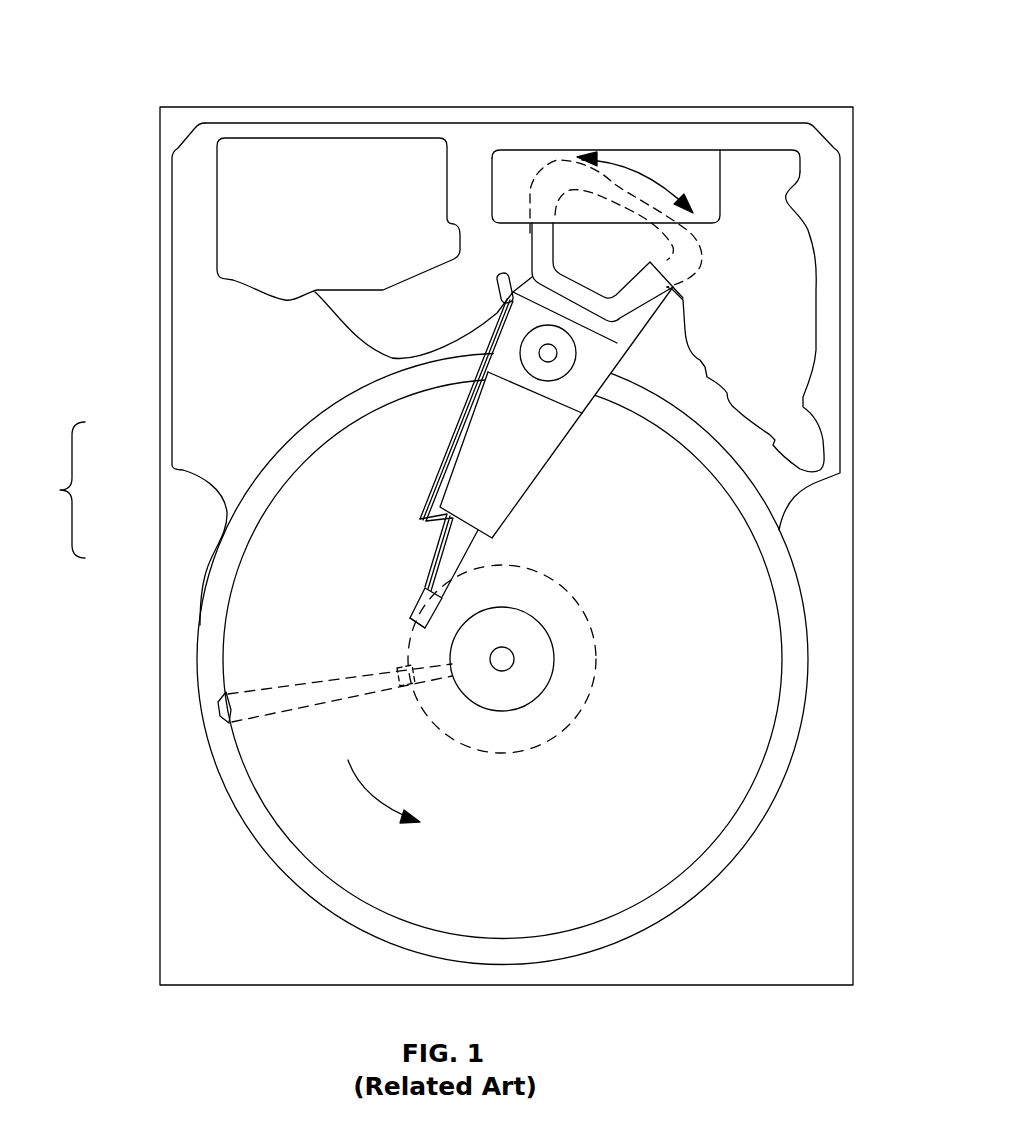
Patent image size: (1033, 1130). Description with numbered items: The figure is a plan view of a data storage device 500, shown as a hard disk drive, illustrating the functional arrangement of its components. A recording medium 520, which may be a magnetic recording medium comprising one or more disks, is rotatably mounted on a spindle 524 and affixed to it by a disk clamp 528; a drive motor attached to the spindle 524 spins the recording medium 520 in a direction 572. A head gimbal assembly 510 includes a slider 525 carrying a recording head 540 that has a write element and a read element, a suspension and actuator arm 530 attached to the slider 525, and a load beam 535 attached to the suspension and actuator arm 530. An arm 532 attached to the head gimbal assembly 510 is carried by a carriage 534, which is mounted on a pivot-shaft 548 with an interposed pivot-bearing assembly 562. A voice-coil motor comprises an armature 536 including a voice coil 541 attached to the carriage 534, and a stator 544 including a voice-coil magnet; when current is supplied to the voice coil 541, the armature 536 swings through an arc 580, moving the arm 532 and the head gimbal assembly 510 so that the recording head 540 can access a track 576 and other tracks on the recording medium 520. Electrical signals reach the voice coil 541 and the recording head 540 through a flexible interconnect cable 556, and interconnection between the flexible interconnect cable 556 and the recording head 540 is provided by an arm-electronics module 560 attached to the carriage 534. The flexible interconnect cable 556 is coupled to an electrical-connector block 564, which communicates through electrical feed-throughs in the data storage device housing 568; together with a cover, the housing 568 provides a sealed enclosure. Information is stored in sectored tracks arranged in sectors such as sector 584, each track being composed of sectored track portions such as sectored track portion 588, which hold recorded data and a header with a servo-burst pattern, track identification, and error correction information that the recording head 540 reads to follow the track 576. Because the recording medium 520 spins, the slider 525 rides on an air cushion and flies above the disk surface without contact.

The data storage device 500 is at (150, 29).
The head gimbal assembly 510 is at (50, 490).
The recording medium 520 is at (745, 647).
The spindle 524 is at (510, 698).
The slider 525 is at (272, 558).
The disk clamp 528 is at (507, 661).
The suspension and actuator arm 530 is at (290, 525).
The arm 532 is at (500, 485).
The carriage 534 is at (584, 416).
The load beam 535 is at (307, 425).
The armature 536 is at (517, 272).
The recording head 540 is at (263, 582).
The voice coil 541 is at (540, 233).
The stator 544 is at (808, 243).
The pivot-shaft 548 is at (557, 356).
The flexible interconnect cable 556 is at (315, 292).
The arm-electronics module 560 is at (498, 300).
The pivot-bearing assembly 562 is at (521, 341).
The electrical-connector block 564 is at (238, 218).
The data storage device housing 568 is at (833, 123).
The direction 572 is at (378, 795).
The track 576 is at (563, 589).
The arc 580 is at (633, 168).
The sector 584 is at (218, 712).
The sectored track portion 588 is at (258, 630).